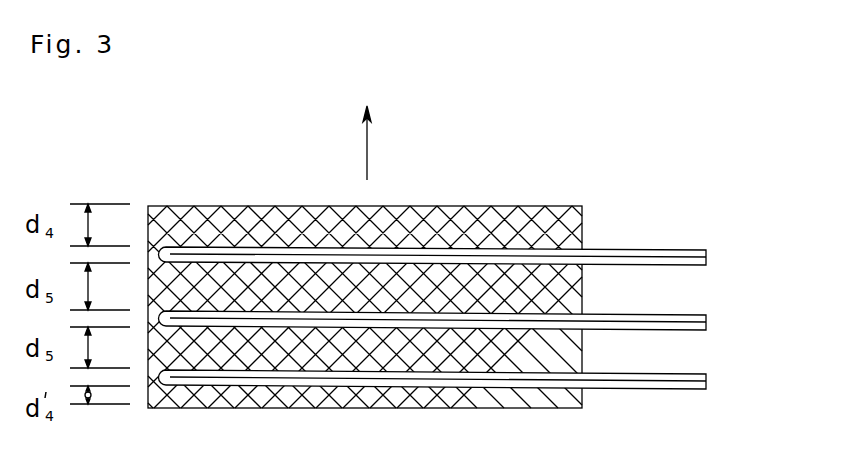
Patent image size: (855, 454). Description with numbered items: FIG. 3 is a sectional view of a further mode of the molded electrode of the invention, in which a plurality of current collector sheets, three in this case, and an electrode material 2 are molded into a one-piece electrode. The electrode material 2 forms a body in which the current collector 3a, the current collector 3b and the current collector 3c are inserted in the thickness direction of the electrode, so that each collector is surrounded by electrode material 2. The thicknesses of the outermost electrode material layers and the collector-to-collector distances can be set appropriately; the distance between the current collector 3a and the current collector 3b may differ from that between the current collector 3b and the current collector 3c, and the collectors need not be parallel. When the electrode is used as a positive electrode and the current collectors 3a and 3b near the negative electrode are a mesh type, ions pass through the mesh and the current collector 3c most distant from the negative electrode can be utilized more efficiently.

The electrode material 2 is at (482, 233).
The current collector 3a is at (670, 260).
The current collector 3b is at (670, 323).
The current collector 3c is at (670, 384).